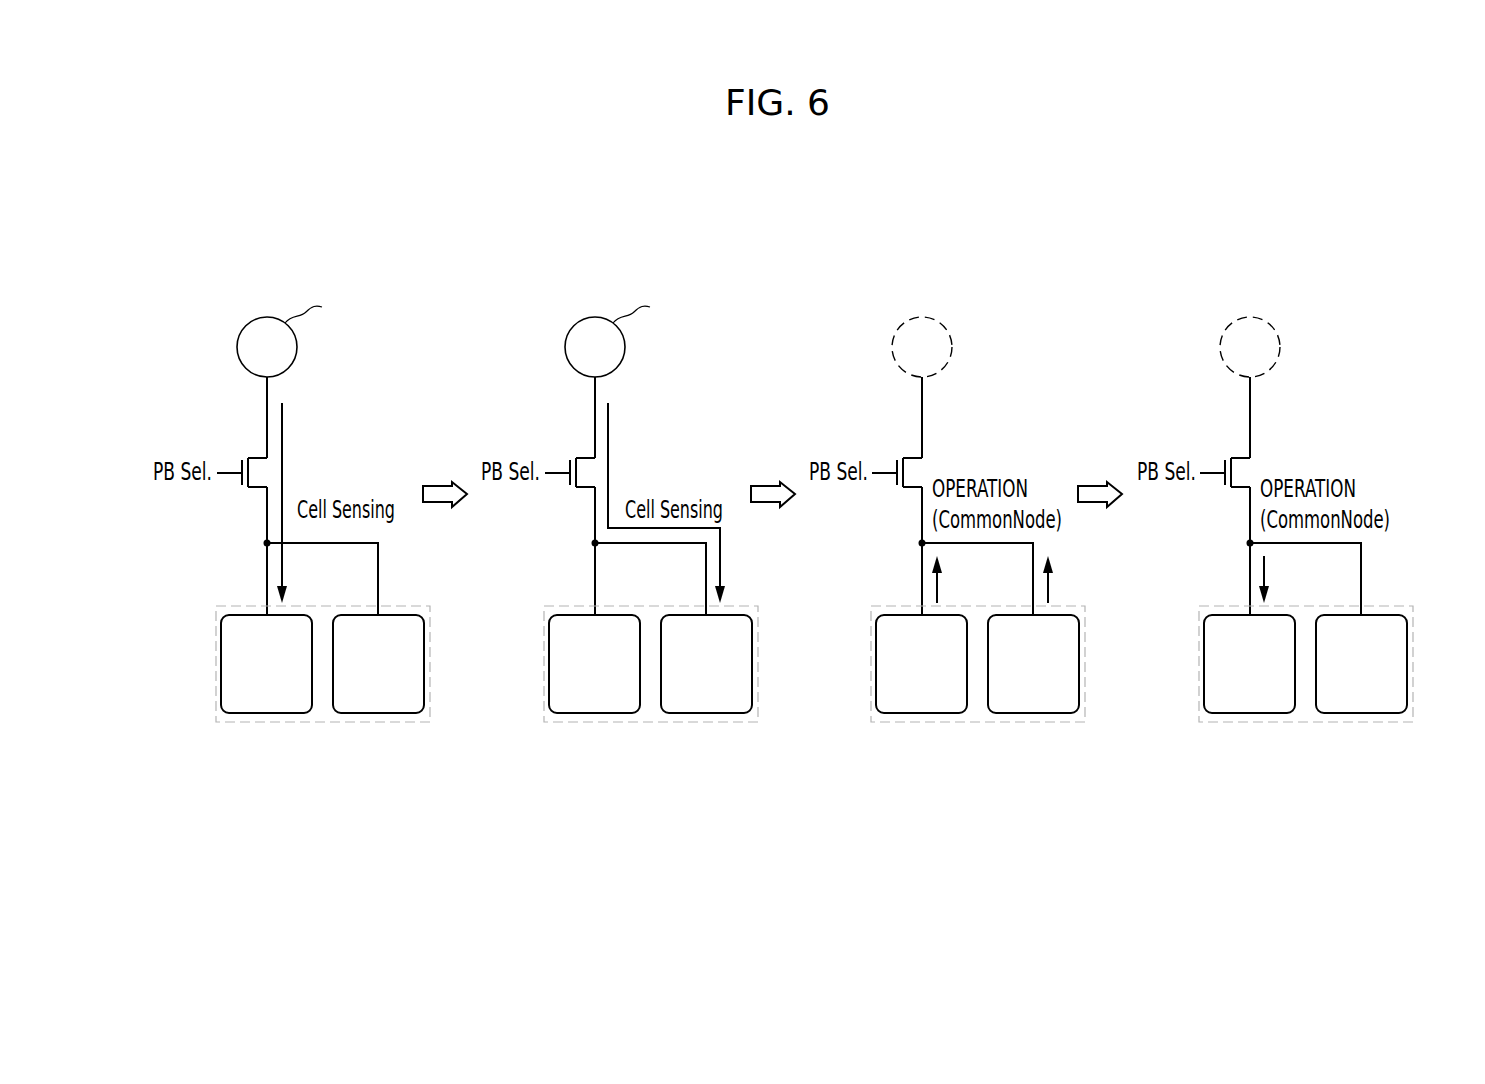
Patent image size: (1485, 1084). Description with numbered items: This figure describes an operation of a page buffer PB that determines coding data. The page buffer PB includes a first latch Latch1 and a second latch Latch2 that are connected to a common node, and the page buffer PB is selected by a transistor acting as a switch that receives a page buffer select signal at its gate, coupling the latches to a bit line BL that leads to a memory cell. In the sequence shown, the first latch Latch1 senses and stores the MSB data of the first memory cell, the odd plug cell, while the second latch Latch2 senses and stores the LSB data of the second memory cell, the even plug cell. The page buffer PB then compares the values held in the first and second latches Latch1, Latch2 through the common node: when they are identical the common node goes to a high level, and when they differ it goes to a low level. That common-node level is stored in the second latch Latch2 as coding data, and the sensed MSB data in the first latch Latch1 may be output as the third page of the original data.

The bit line BL is at (758, 371).
The page buffer PB is at (1389, 758).
The first latch Latch1 is at (758, 664).
The second latch Latch2 is at (870, 664).